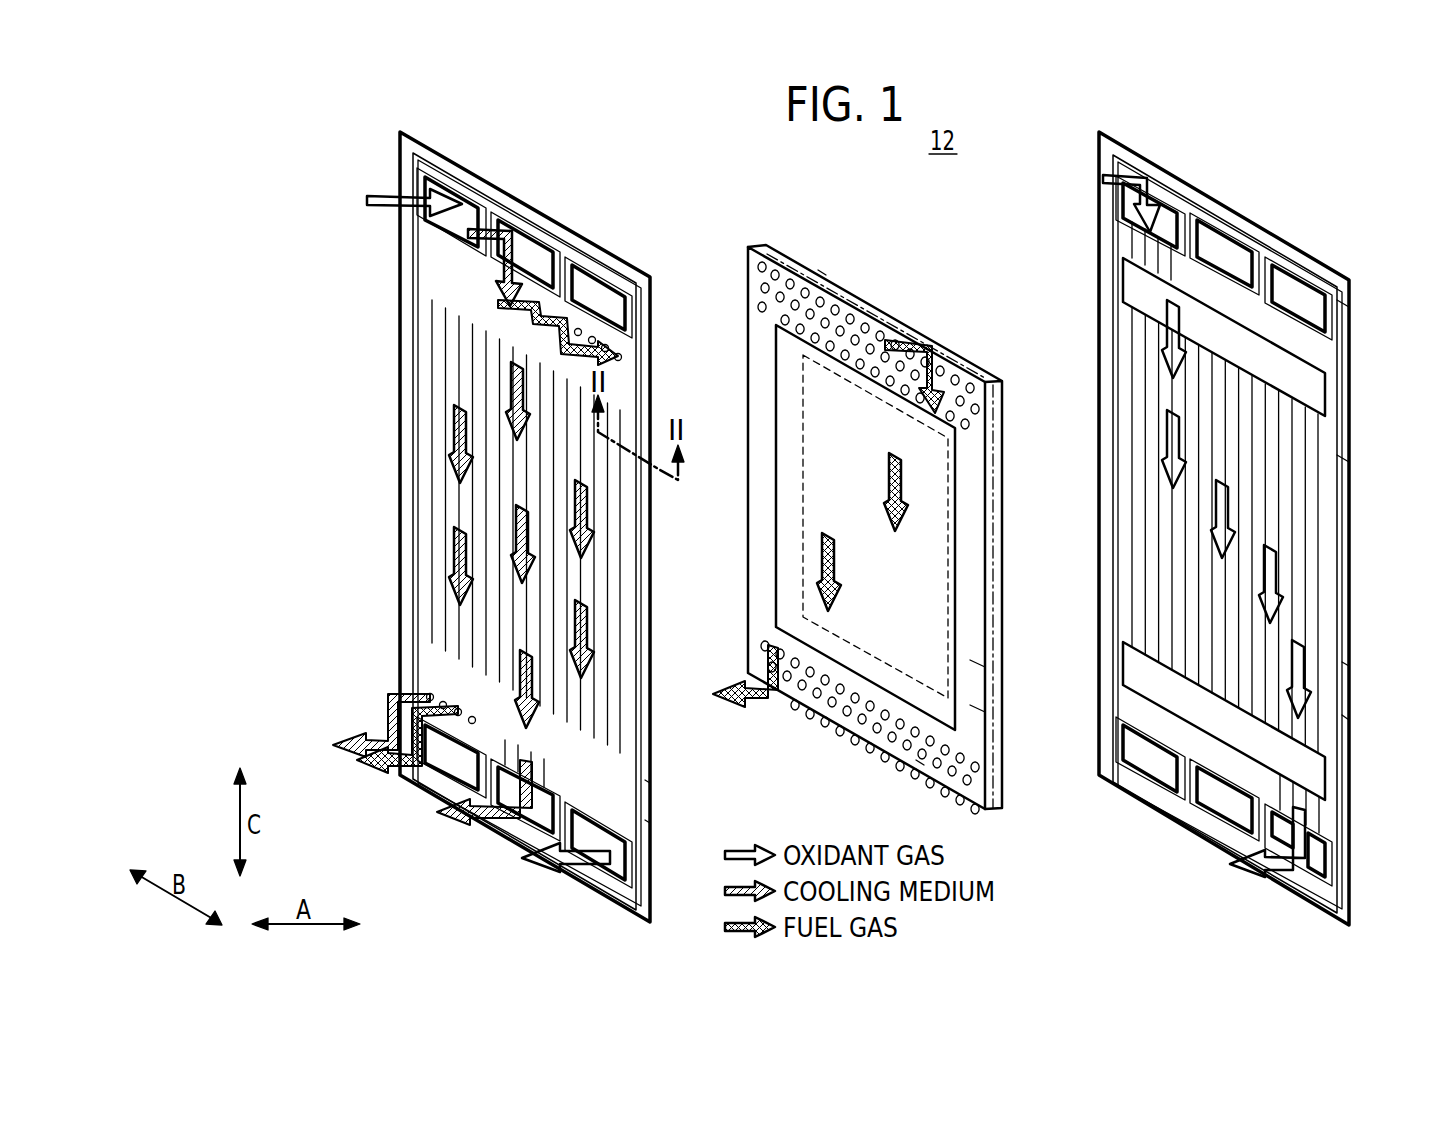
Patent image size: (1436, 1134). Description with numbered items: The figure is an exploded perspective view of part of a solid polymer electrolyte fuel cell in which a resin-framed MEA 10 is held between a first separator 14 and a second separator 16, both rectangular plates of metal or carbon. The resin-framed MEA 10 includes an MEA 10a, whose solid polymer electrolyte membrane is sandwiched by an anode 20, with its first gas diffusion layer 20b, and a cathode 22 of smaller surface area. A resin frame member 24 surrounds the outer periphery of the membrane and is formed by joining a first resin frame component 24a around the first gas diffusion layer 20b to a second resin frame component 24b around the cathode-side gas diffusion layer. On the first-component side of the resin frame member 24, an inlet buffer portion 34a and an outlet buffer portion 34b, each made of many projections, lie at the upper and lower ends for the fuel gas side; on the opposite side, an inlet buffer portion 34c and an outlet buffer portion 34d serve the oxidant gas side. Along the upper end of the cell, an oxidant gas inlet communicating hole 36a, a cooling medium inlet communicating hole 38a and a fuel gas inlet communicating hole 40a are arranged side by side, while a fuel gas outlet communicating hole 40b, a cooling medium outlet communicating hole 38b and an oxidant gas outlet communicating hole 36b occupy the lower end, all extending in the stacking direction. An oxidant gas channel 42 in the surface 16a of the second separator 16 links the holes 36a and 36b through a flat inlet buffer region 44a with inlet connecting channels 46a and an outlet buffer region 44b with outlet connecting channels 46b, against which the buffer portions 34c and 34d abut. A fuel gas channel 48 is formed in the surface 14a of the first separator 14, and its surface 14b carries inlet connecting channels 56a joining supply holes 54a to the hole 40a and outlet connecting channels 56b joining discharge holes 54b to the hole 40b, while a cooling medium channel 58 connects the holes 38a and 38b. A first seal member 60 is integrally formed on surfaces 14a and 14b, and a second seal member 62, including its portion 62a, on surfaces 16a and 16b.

The resin-framed MEA 10 is at (746, 272).
The MEA 10a is at (790, 387).
The first separator 14 is at (400, 155).
The surface of the first separator 14a is at (648, 778).
The surface of the first separator 14b is at (650, 822).
The second separator 16 is at (1098, 163).
The surface of the second separator 16a is at (1347, 720).
The surface of the second separator 16b is at (1345, 665).
The anode 20 is at (822, 465).
The first gas diffusion layer 20b is at (855, 562).
The cathode 22 is at (930, 505).
The resin frame member 24 is at (796, 257).
The first resin frame component 24a is at (975, 708).
The second resin frame component 24b is at (975, 663).
The inlet buffer portion 34a is at (868, 338).
The outlet buffer portion 34b is at (852, 712).
The inlet buffer portion 34c is at (822, 268).
The outlet buffer portion 34d is at (920, 760).
The oxidant gas inlet communicating hole 36a is at (472, 206).
The oxidant gas outlet communicating hole 36b is at (598, 856).
The cooling medium inlet communicating hole 38a is at (547, 258).
The cooling medium outlet communicating hole 38b is at (530, 830).
The fuel gas inlet communicating hole 40a is at (609, 297).
The fuel gas outlet communicating hole 40b is at (440, 750).
The oxidant gas channel 42 is at (1300, 612).
The inlet buffer region 44a is at (1316, 385).
The outlet buffer region 44b is at (1318, 770).
The inlet connecting channels 46a is at (1140, 242).
The outlet connecting channels 46b is at (1318, 812).
The fuel gas channel 48 is at (445, 505).
The supply holes 54a is at (612, 343).
The discharge holes 54b is at (490, 700).
The inlet connecting channels 56a is at (622, 356).
The outlet connecting channels 56b is at (478, 760).
The cooling medium channel 58 is at (440, 555).
The first seal member 60 is at (410, 355).
The second seal member 62 is at (1340, 308).
The seal member portion 62a is at (1340, 460).